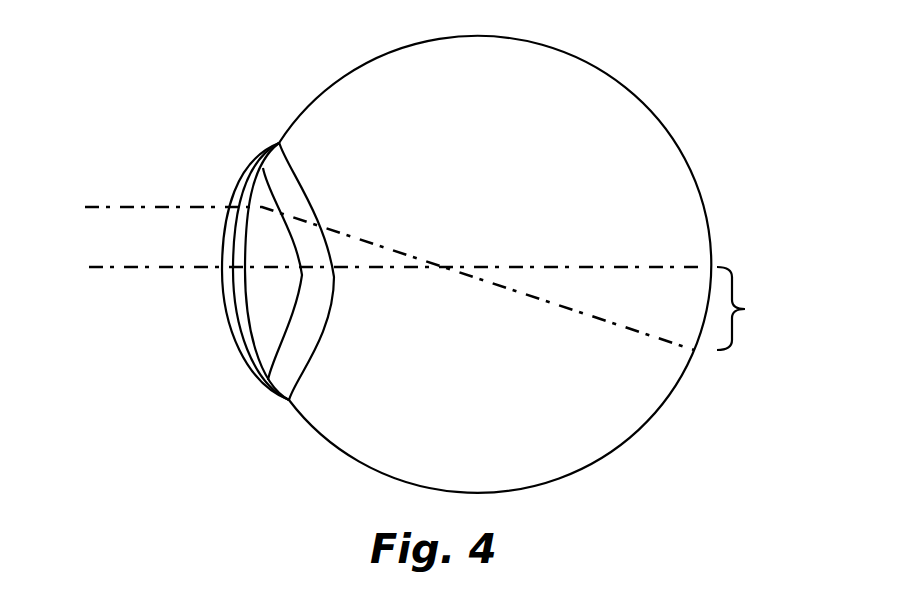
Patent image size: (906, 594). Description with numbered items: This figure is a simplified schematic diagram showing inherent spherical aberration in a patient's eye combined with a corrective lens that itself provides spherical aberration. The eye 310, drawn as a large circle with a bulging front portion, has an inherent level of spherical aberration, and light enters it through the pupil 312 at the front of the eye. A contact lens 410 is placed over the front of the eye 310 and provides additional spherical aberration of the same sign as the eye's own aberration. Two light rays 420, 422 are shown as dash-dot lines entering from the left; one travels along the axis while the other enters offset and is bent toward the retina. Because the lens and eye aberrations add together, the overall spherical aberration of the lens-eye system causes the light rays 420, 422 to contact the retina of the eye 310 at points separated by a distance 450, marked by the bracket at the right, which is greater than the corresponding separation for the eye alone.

The eye 310 is at (378, 58).
The pupil 312 is at (270, 328).
The contact lens 410 is at (245, 170).
The light ray 420 is at (168, 268).
The light ray 422 is at (127, 207).
The distance 450 is at (769, 308).